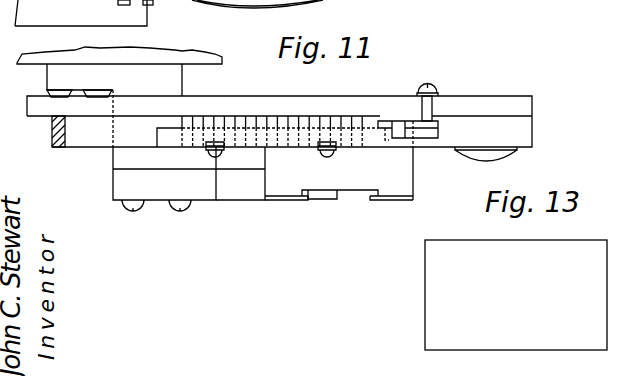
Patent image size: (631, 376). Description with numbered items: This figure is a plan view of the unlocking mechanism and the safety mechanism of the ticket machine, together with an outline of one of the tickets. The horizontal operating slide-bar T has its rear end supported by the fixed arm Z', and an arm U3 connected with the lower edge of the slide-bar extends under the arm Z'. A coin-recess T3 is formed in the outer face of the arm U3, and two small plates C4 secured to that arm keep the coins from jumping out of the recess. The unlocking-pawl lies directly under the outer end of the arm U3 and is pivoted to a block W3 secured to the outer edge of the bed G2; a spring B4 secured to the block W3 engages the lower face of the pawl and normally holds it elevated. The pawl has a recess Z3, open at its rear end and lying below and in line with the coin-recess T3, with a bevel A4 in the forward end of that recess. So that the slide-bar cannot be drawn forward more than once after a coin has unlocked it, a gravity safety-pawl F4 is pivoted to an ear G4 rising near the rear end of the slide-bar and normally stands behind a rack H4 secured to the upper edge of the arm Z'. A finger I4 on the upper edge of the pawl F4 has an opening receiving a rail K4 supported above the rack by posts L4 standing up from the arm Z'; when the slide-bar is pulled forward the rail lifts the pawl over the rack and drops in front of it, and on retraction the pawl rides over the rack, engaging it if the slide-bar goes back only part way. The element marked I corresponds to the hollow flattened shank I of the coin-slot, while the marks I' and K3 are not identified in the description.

In FIG. 11, the bed G2 is at (172, 44).
In FIG. 11, the spring B4 is at (246, 4).
In FIG. 11, the recess Z3 is at (351, 10).
In FIG. 11, the block W3 is at (131, 132).
In FIG. 11, the operating slide-bar T is at (279, 121).
In FIG. 11, the fixed arm Z' is at (82, 118).
In FIG. 11, the rack H4 is at (230, 118).
In FIG. 11, the posts L4 is at (224, 150).
In FIG. 11, the rail K4 is at (377, 134).
In FIG. 11, the finger I4 is at (398, 121).
In FIG. 11, the ear G4 is at (440, 93).
In FIG. 11, the gravity safety-pawl F4 is at (438, 131).
In FIG. 11, the arm U3 is at (408, 158).
In FIG. 11, the disc I' is at (486, 161).
In FIG. 11, the compartment K3 is at (240, 173).
In FIG. 11, the coin-recess T3 is at (352, 186).
In FIG. 11, the small plates C4 is at (293, 200).
In FIG. 11, the bevel A4 is at (327, 199).
In FIG. 13, the hollow flattened shank I is at (516, 295).